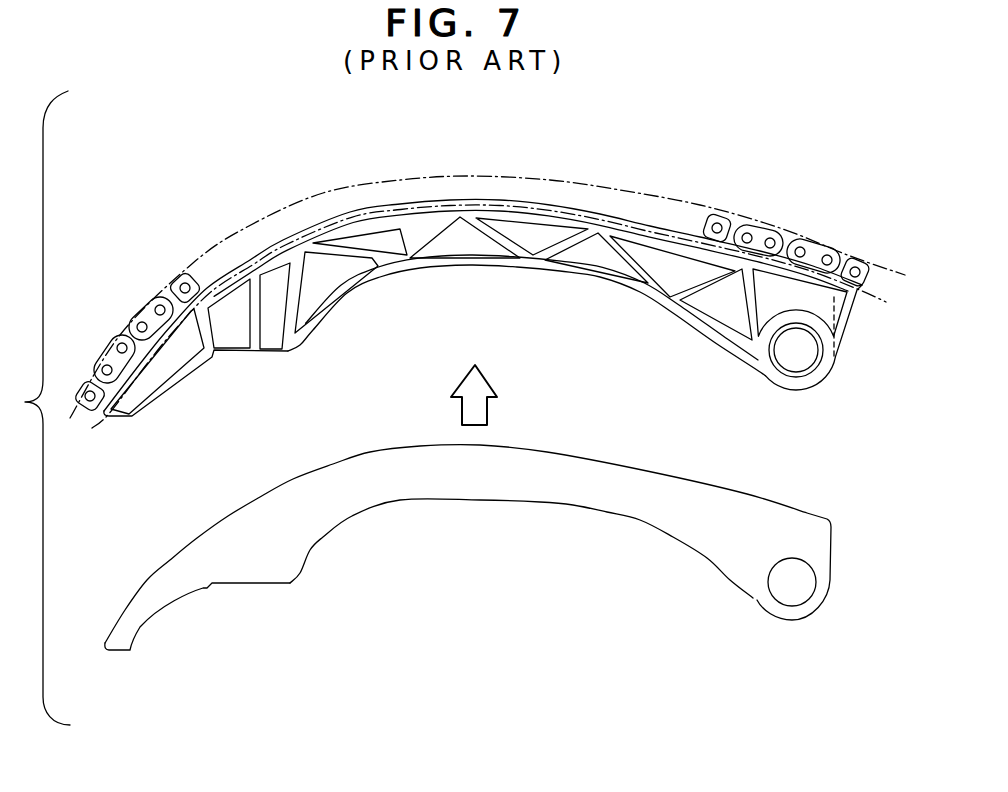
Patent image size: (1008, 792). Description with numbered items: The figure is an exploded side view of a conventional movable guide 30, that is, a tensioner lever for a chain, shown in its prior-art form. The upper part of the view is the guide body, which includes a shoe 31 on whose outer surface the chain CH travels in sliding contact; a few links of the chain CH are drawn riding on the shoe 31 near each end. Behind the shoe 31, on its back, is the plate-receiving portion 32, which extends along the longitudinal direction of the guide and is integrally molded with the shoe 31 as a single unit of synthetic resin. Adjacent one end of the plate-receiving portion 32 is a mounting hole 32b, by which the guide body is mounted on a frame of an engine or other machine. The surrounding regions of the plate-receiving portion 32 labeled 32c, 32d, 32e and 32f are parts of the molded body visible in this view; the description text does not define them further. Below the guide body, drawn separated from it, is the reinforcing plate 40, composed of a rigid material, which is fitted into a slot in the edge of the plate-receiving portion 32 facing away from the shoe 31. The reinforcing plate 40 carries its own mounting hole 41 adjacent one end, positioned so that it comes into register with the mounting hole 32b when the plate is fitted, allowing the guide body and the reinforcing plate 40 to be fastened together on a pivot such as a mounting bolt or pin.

The movable guide 30 is at (512, 158).
The shoe 31 is at (423, 200).
The plate-receiving portion 32 is at (374, 238).
The mounting hole 32b is at (786, 364).
The boss 32c is at (826, 366).
The foot portion 32d is at (259, 356).
The rib 32e is at (627, 254).
The lower chord 32f is at (348, 291).
The reinforcing plate 40 is at (548, 488).
The mounting hole 41 is at (783, 593).
The chain CH is at (110, 348).